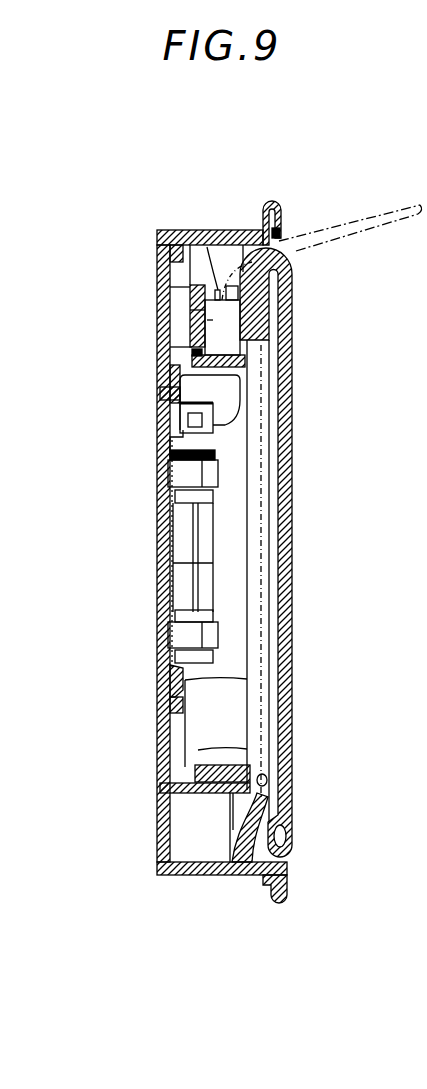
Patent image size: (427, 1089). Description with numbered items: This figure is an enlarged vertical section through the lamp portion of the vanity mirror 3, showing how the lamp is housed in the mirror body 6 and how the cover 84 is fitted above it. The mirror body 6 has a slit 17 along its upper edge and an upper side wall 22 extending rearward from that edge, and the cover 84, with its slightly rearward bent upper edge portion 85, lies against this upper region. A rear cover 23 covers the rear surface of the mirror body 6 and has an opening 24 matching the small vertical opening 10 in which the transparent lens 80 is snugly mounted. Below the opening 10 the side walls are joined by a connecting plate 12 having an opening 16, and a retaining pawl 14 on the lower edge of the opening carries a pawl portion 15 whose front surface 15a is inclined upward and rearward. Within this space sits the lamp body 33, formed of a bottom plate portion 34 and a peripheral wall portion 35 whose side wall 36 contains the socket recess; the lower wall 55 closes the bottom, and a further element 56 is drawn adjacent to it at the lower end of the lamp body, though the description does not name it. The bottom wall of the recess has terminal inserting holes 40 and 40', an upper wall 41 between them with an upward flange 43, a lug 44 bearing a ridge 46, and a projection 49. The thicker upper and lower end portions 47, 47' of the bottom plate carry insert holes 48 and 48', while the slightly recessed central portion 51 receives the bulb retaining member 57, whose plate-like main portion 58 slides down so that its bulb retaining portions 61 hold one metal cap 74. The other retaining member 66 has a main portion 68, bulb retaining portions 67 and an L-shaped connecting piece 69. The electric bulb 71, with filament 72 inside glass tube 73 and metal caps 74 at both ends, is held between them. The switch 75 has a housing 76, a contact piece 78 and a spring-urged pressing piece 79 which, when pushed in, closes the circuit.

The vanity mirror 3 is at (318, 206).
The mirror body 6 is at (288, 890).
The opening 10 is at (272, 786).
The connecting plate 12 is at (160, 690).
The retaining pawl 14 is at (165, 784).
The pawl portion 15 is at (203, 782).
The front surface 15a is at (268, 775).
The opening 16 is at (165, 720).
The slit 17 is at (233, 282).
The upper side wall 22 is at (224, 270).
The rear cover 23 is at (157, 240).
The opening 24 is at (160, 797).
The lamp body 33 is at (170, 556).
The bottom plate portion 34 is at (172, 600).
The peripheral wall portion 35 is at (293, 522).
The side wall 36 is at (293, 565).
The terminal inserting hole 40 is at (306, 395).
The terminal inserting hole 40' is at (136, 375).
The upper wall 41 is at (250, 367).
The flange 43 is at (246, 343).
The lug 44 is at (190, 292).
The ridge 46 is at (190, 311).
The upper end portion 47 is at (151, 404).
The lower end portion 47' is at (324, 678).
The insert hole 48 is at (99, 383).
The insert hole 48' is at (103, 713).
The projection 49 is at (240, 424).
The central portion 51 is at (175, 520).
The lower wall 55 is at (243, 800).
The box 56 is at (199, 795).
The electric bulb retaining member 57 is at (175, 540).
The main portion 58 is at (175, 620).
The bulb retaining portion 61 is at (219, 629).
The electric bulb retaining member 66 is at (196, 429).
The bulb retaining portion 67 is at (218, 476).
The main portion 68 is at (170, 447).
The connecting piece 69 is at (252, 405).
The electric bulb 71 is at (262, 540).
The filament 72 is at (172, 571).
The glass tube 73 is at (215, 590).
The metal cap 74 is at (215, 497).
The switch 75 is at (277, 313).
The housing 76 is at (205, 323).
The contact piece 78 is at (190, 346).
The pressing piece 79 is at (205, 246).
The lens 80 is at (270, 720).
The cover 84 is at (366, 222).
The upper edge portion 85 is at (252, 258).